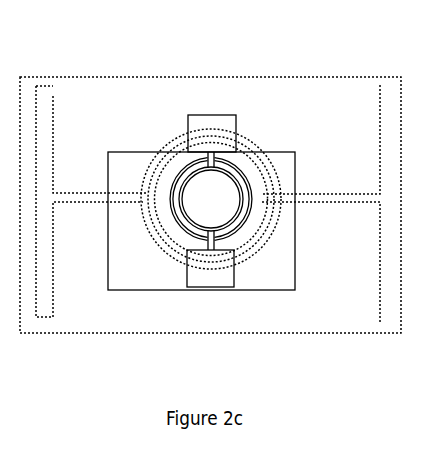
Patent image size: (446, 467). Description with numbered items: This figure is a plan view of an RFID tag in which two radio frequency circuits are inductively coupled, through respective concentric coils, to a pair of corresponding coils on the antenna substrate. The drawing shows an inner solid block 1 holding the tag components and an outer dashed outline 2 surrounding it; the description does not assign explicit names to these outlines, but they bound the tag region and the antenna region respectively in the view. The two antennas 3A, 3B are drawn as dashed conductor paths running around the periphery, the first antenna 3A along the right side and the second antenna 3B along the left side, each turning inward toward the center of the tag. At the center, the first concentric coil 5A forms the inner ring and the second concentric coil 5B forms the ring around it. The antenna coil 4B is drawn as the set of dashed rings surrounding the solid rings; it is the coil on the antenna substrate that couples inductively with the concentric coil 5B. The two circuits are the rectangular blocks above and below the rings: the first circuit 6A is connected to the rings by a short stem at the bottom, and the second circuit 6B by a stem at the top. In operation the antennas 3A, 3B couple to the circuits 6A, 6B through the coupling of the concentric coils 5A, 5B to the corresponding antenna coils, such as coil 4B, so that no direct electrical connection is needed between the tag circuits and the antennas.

The first coupling element (housing block) 1 is at (99, 265).
The second coupling element (outer loop) 2 is at (310, 66).
The antenna 3A is at (390, 93).
The antenna 3B is at (60, 92).
The coil 4B is at (147, 150).
The concentric coil 5A is at (244, 154).
The concentric coil 5B is at (268, 170).
The radio frequency circuit 6A is at (209, 304).
The radio frequency circuit 6B is at (202, 104).